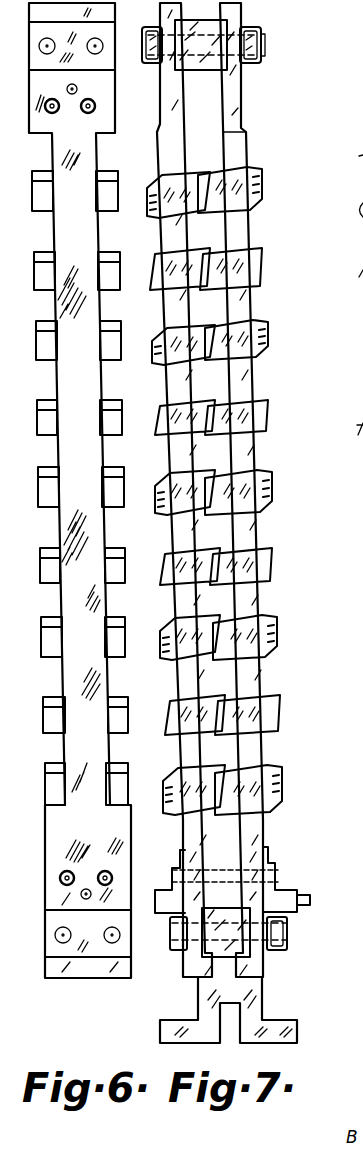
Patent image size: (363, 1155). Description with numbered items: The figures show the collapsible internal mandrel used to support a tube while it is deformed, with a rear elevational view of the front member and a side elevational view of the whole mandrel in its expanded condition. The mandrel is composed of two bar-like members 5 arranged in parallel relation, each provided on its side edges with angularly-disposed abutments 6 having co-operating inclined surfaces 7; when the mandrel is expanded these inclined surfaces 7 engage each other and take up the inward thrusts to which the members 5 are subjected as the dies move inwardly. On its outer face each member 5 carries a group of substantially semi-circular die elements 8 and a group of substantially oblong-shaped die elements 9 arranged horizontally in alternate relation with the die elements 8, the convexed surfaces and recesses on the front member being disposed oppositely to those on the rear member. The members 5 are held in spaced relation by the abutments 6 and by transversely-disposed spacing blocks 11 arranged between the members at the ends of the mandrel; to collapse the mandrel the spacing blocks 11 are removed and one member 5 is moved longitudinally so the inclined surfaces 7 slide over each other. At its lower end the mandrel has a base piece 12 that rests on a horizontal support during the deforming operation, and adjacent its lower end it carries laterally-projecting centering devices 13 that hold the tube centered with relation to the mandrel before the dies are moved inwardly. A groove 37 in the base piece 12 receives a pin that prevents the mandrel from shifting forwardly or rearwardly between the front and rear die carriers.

In FIG. 6, the bar-like member 5 is at (60, 148).
In FIG. 7, the bar-like member 5 is at (226, 107).
In FIG. 6, the abutment 6 is at (38, 418).
In FIG. 7, the abutment 6 is at (214, 180).
In FIG. 6, the inclined surface 7 is at (108, 346).
In FIG. 7, the inclined surface 7 is at (212, 256).
In FIG. 7, the die element 8 is at (262, 197).
In FIG. 7, the die element 9 is at (260, 277).
In FIG. 7, the spacing block 11 is at (212, 30).
In FIG. 7, the base piece 12 is at (255, 1000).
In FIG. 7, the centering device 13 is at (168, 912).
In FIG. 7, the groove 37 is at (230, 1035).